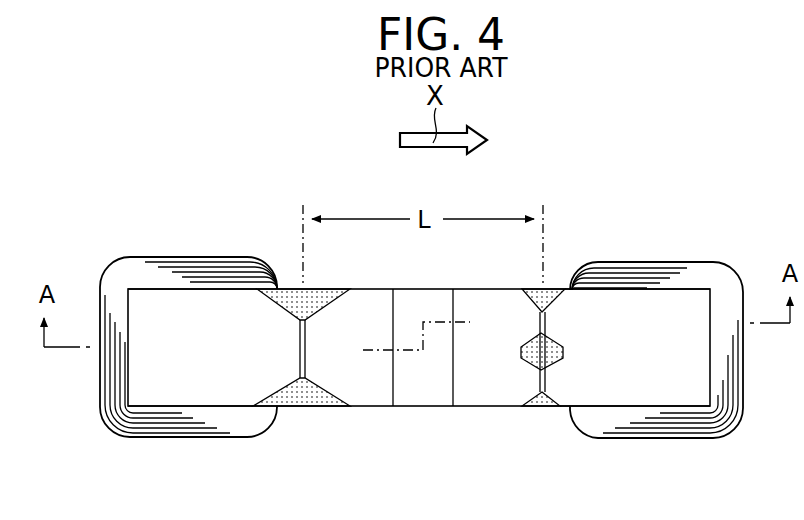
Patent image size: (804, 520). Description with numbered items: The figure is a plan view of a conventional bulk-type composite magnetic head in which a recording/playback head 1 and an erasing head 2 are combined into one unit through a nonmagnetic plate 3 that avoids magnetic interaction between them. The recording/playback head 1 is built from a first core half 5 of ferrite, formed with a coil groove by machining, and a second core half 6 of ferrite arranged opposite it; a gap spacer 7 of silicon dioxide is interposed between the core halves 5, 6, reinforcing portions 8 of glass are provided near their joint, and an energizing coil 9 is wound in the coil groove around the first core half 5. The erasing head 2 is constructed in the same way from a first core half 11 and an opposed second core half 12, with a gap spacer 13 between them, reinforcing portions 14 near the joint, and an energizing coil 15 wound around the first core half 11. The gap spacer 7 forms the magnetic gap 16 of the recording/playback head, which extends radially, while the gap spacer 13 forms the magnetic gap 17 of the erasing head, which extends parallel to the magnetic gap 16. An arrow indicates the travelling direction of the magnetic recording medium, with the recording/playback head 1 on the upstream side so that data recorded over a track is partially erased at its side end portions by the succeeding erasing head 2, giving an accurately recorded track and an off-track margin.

The recording/playback head 1 is at (188, 333).
The erasing head 2 is at (660, 339).
The nonmagnetic plate 3 is at (425, 400).
The first core half 5 is at (198, 387).
The second core half 6 is at (373, 390).
The gap spacer 7 is at (312, 398).
The reinforcing portions 8 is at (283, 404).
The energizing coil 9 is at (122, 437).
The first core half 11 is at (672, 395).
The second core half 12 is at (472, 400).
The gap spacer 13 is at (560, 402).
The reinforcing portions 14 is at (523, 370).
The energizing coil 15 is at (728, 437).
The magnetic gap of the recording/playback head 16 is at (301, 398).
The magnetic gap of the erasing head 17 is at (528, 380).